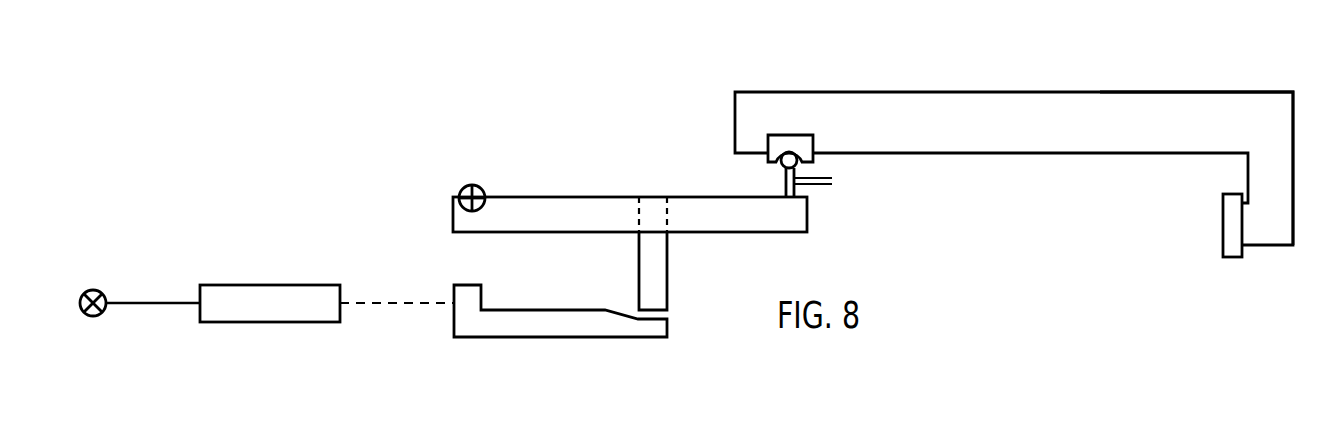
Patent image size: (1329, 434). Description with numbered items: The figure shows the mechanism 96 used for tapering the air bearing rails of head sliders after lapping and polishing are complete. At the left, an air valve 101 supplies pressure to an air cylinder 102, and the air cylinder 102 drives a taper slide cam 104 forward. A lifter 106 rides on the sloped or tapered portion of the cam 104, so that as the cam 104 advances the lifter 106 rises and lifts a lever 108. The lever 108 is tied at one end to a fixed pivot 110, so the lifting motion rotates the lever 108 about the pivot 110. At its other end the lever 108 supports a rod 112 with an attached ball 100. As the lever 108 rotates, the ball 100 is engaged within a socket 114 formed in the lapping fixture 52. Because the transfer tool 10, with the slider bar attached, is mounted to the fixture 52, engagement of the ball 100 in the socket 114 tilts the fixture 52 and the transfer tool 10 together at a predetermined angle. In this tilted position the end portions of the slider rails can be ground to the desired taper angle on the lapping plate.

The transfer tool 10 is at (1227, 227).
The lapping fixture 52 is at (1232, 85).
The mechanism 96 is at (786, 66).
The ball 100 is at (782, 167).
The air valve 101 is at (92, 290).
The air cylinder 102 is at (280, 290).
The taper slide cam 104 is at (525, 315).
The lifter 106 is at (655, 258).
The lever 108 is at (548, 202).
The fixed pivot 110 is at (468, 186).
The rod 112 is at (825, 187).
The socket 114 is at (795, 140).